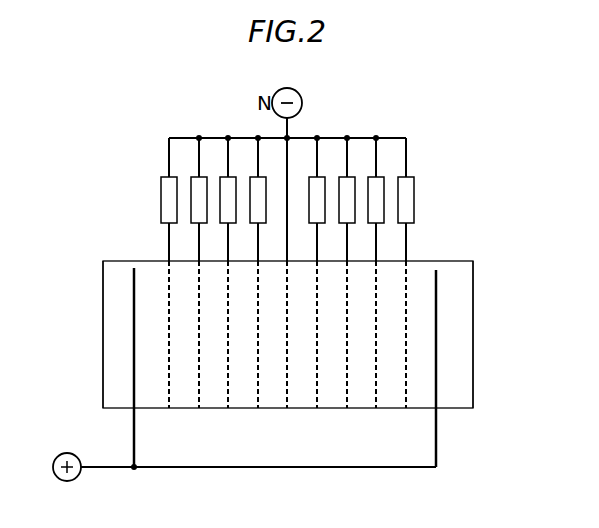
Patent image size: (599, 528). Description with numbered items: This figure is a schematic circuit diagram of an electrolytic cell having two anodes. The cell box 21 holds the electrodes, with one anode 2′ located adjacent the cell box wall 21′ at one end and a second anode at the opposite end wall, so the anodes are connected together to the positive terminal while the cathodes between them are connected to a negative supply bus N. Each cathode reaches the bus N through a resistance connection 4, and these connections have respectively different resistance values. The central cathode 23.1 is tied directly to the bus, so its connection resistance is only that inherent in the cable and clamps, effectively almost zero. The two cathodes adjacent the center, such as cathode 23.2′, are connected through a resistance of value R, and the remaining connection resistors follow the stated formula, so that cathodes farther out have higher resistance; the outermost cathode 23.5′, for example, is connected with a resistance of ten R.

The resistance connection 4 is at (414, 206).
The anode 2′ is at (134, 305).
The cell box 21 is at (462, 408).
The cell box wall 21′ is at (103, 367).
The central cathode 23.1 is at (287, 380).
The cathode 23.2′ is at (258, 387).
The cathode 23.5′ is at (168, 387).